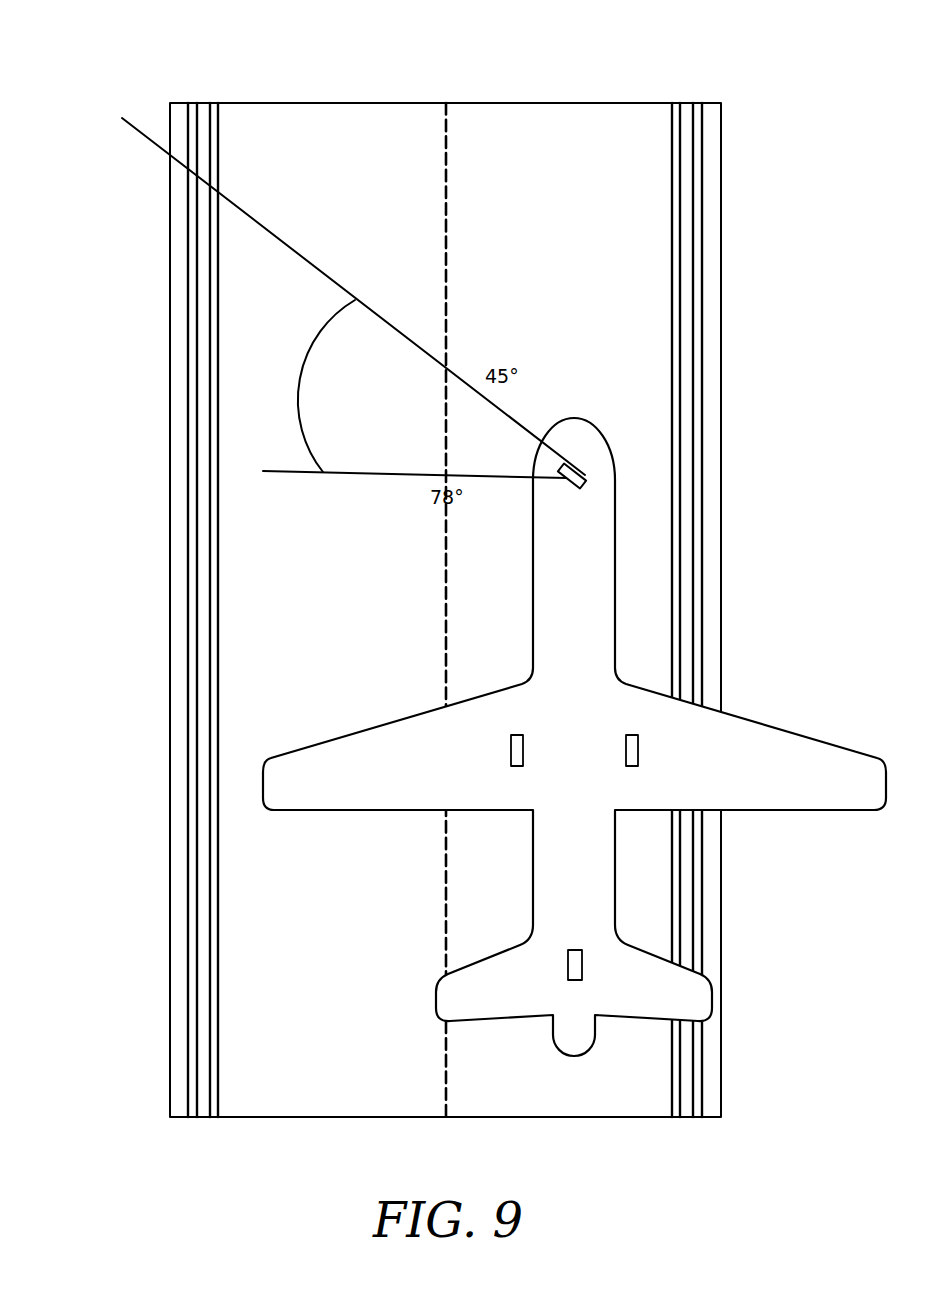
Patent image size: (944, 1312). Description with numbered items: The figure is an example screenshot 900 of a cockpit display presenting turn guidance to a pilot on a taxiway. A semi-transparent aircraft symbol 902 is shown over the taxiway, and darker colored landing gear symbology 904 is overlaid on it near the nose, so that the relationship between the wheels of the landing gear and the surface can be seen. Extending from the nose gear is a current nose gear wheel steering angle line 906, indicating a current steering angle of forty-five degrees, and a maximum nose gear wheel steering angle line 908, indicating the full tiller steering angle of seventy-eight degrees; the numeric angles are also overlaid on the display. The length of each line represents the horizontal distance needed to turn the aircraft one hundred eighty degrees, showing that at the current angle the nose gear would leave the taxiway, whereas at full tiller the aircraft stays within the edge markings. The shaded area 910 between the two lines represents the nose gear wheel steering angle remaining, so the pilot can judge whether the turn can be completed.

The screenshot 900 is at (82, 57).
The semi-transparent aircraft symbol 902 is at (740, 718).
The landing gear symbology 904 is at (582, 489).
The current nose gear wheel steering angle line 906 is at (139, 129).
The maximum nose gear wheel steering angle line 908 is at (298, 477).
The shaded area 910 is at (312, 371).